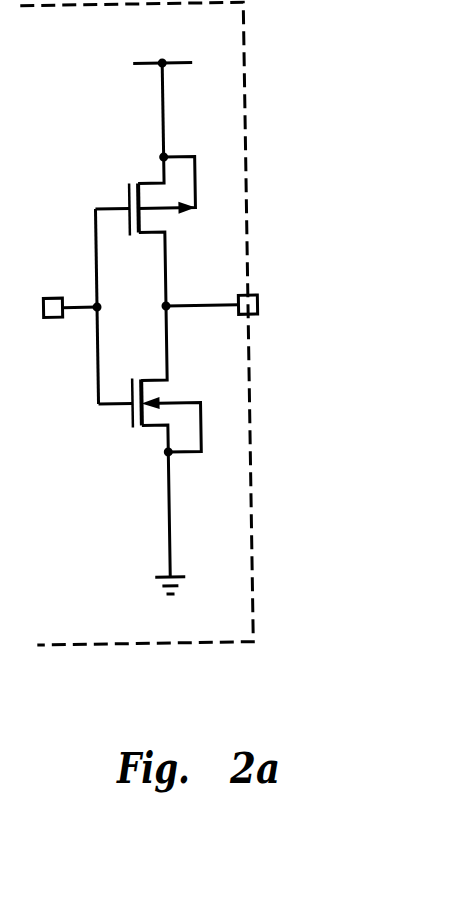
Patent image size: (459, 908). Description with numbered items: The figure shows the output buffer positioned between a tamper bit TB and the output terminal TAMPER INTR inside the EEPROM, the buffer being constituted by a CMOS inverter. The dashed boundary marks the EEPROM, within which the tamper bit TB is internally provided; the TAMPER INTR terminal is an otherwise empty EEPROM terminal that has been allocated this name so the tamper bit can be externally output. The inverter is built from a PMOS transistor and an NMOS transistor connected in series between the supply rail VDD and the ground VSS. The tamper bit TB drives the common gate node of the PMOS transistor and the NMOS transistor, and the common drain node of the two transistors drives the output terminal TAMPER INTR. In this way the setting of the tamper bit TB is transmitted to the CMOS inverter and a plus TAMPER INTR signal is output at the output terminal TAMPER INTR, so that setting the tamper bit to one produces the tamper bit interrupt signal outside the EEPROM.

The element EEPROM is at (136, 323).
The VDD supply rail VDD is at (163, 89).
The PMOS transistor PMOS is at (140, 275).
The NMOS transistor NMOS is at (144, 441).
The tamper bit TB is at (69, 292).
The TAMPER INTR terminal TAMPER is at (257, 303).
The VSS ground VSS is at (193, 600).